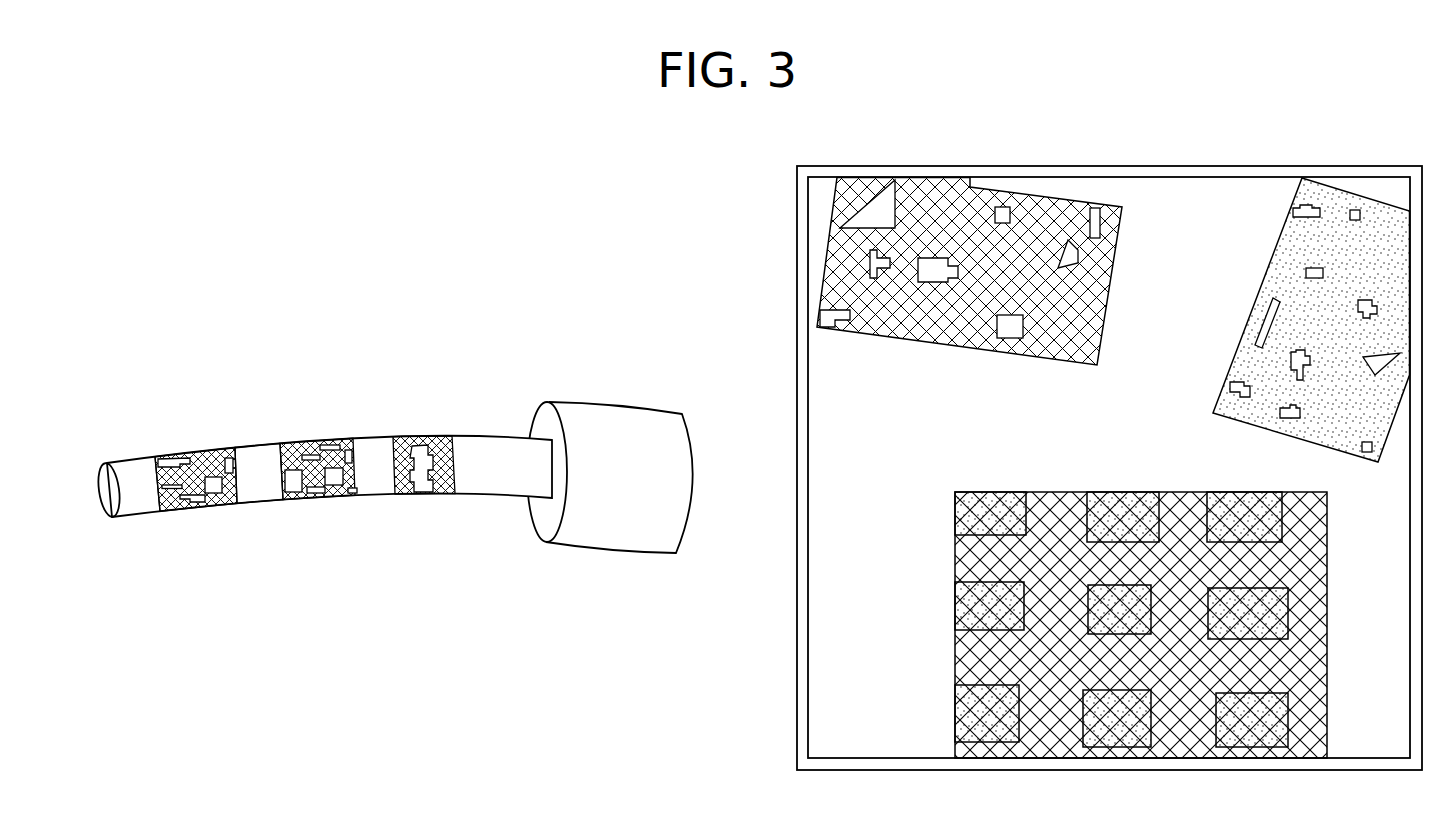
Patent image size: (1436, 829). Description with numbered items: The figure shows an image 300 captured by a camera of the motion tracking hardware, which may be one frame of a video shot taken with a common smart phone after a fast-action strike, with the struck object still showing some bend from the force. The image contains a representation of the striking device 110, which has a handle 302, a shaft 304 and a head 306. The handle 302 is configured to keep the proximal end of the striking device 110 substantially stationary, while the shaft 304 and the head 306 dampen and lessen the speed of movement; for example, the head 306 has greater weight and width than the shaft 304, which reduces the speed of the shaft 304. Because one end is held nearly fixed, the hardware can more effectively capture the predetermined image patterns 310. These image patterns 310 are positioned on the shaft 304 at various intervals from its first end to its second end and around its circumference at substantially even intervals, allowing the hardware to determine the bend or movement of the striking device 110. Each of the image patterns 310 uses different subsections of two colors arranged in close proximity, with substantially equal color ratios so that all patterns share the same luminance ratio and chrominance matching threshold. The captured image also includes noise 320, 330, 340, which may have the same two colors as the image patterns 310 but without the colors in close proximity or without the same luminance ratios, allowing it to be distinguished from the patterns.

The image 300 is at (354, 228).
The handle 302 is at (140, 478).
The shaft 304 is at (253, 468).
The image patterns 310 is at (208, 490).
The striking device 110 is at (492, 458).
The head 306 is at (636, 445).
The noise 320 is at (872, 262).
The noise 330 is at (1333, 283).
The noise 340 is at (1030, 680).